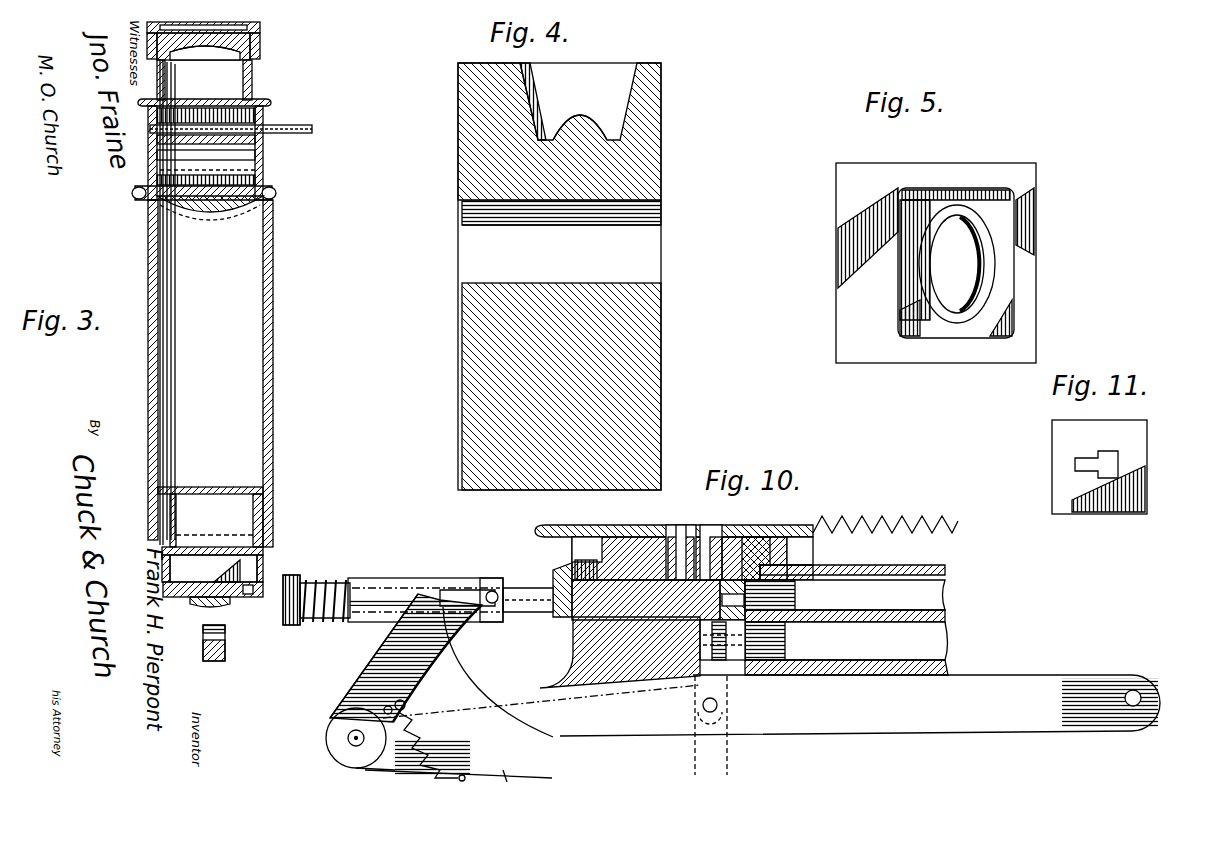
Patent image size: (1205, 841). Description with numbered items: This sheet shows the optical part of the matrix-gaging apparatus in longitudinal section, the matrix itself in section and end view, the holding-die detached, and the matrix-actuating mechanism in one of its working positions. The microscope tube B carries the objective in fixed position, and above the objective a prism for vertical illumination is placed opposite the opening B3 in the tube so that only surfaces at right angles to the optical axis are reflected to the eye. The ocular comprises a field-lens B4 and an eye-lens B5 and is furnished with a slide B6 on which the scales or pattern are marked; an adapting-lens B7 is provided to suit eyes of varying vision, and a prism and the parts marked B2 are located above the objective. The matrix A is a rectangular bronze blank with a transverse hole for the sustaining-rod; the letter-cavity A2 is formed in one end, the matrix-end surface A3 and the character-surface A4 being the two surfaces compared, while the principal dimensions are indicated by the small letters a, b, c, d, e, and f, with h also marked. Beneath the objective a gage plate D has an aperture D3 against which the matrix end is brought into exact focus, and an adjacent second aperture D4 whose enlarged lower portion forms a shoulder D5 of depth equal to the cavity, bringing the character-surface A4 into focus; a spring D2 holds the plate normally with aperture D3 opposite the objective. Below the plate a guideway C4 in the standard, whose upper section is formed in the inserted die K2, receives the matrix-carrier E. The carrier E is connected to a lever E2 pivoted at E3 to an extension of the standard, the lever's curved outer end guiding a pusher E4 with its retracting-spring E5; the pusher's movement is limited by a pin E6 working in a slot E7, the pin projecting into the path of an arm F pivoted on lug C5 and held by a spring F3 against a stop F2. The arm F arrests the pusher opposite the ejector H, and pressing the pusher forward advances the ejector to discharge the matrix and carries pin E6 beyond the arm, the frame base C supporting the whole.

In FIG. 3, the tube B is at (220, 303).
In FIG. 3, the prism B2 is at (240, 565).
In FIG. 3, the opening in tube B3 is at (255, 572).
In FIG. 3, the field-lens B4 is at (235, 212).
In FIG. 3, the eye-lens B5 is at (235, 50).
In FIG. 3, the slide B6 is at (225, 115).
In FIG. 3, the adapting-lens B7 is at (240, 20).
In FIG. 3, the matrix A is at (210, 652).
In FIG. 4, the matrix A is at (570, 276).
In FIG. 5, the matrix A is at (933, 278).
In FIG. 10, the matrix A is at (765, 662).
In FIG. 3, the letter-cavity A2 is at (241, 617).
In FIG. 4, the letter-cavity A2 is at (587, 75).
In FIG. 5, the letter-cavity A2 is at (993, 192).
In FIG. 4, the matrix-end surface A3 is at (492, 55).
In FIG. 5, the matrix-end surface A3 is at (848, 322).
In FIG. 4, the character-surface A4 is at (573, 112).
In FIG. 5, the character-surface A4 is at (930, 318).
In FIG. 4, the dimension a is at (640, 63).
In FIG. 5, the dimension a is at (1030, 245).
In FIG. 5, the dimension b is at (970, 360).
In FIG. 5, the dimension c is at (945, 172).
In FIG. 5, the dimension d is at (1000, 346).
In FIG. 4, the dimension e is at (620, 135).
In FIG. 5, the dimension e is at (1030, 216).
In FIG. 4, the dimension f is at (582, 63).
In FIG. 5, the dimension f is at (979, 400).
In FIG. 5, the surface h is at (875, 273).
In FIG. 11, the inserted die K2 is at (1127, 478).
In FIG. 10, the gage plate D is at (560, 537).
In FIG. 10, the spring D2 is at (862, 510).
In FIG. 10, the aperture D3 is at (716, 522).
In FIG. 10, the second aperture D4 is at (683, 525).
In FIG. 10, the shoulder D5 is at (668, 528).
In FIG. 10, the matrix-carrier E is at (690, 676).
In FIG. 10, the lever E2 is at (860, 705).
In FIG. 10, the pivot E3 is at (1133, 690).
In FIG. 10, the pusher E4 is at (292, 625).
In FIG. 10, the retracting-spring E5 is at (330, 620).
In FIG. 10, the pin E6 is at (492, 578).
In FIG. 10, the slot E7 is at (445, 560).
In FIG. 10, the arm F is at (356, 738).
In FIG. 10, the stop F2 is at (428, 690).
In FIG. 10, the spring F3 is at (430, 755).
In FIG. 10, the ejector H is at (575, 582).
In FIG. 10, the base C is at (846, 642).
In FIG. 10, the guideway C4 is at (730, 655).
In FIG. 10, the lug C5 is at (458, 787).